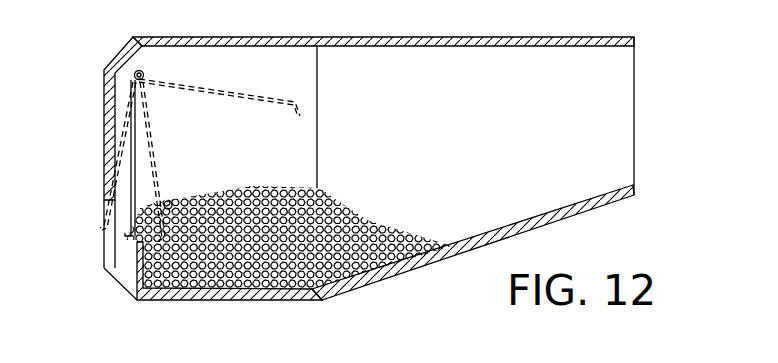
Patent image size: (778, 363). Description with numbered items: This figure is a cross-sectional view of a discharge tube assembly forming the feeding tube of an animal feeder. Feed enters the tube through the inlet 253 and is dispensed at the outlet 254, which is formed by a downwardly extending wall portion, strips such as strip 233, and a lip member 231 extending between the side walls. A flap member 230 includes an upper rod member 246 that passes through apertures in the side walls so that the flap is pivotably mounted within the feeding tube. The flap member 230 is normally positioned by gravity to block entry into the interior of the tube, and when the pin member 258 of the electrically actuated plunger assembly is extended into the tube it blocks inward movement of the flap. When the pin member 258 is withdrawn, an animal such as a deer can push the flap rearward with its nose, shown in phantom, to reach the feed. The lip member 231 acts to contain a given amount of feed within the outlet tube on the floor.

The upper rod member 246 is at (141, 71).
The strip 233 is at (105, 162).
The flap member 230 is at (132, 198).
The outlet 254 is at (113, 252).
The lip member 231 is at (130, 262).
The pin member 258 is at (170, 201).
The inlet 253 is at (622, 112).